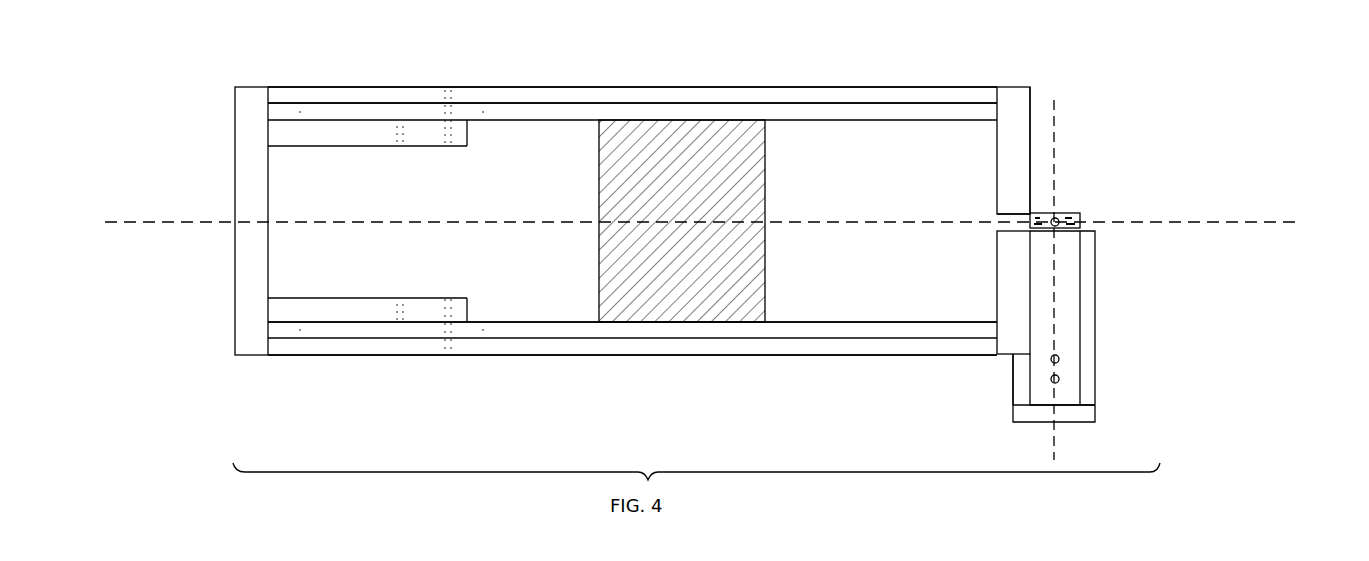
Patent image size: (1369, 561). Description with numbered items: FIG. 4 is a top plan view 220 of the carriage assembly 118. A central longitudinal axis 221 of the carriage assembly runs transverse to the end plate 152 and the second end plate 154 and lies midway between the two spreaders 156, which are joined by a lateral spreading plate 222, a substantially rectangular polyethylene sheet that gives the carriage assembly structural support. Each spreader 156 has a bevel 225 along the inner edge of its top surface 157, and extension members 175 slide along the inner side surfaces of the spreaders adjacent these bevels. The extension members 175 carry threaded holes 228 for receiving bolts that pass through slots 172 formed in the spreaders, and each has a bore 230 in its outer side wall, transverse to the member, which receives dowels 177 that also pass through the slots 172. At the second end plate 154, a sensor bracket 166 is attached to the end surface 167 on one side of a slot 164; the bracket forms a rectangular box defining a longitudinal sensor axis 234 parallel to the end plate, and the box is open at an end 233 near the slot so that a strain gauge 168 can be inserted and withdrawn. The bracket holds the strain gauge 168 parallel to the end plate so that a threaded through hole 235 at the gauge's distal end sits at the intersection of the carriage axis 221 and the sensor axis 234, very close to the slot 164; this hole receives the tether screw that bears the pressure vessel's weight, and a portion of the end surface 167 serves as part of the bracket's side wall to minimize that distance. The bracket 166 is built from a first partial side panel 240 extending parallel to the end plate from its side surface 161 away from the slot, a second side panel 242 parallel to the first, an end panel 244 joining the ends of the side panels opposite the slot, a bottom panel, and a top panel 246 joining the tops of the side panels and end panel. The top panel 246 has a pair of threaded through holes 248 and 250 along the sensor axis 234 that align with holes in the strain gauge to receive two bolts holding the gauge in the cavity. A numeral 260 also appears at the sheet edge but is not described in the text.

The carriage assembly 118 is at (203, 188).
The end plate 152 is at (235, 278).
The second end plate 154 is at (1013, 87).
The spreaders 156 is at (798, 88).
The top surface 157 is at (618, 93).
The side surface 161 is at (1000, 355).
The slot 164 is at (968, 222).
The sensor bracket 166 is at (1115, 252).
The end surface 167 is at (1035, 103).
The strain gauge 168 is at (1080, 222).
The slots 172 is at (483, 93).
The extension members 175 is at (300, 135).
The dowels 177 is at (450, 338).
The top plan view 220 is at (1265, 88).
The central longitudinal axis 221 is at (137, 222).
The lateral spreading plate 222 is at (706, 265).
The bevel 225 is at (500, 112).
The threaded holes 228 is at (400, 140).
The bore 230 is at (447, 128).
The open end 233 is at (1063, 188).
The longitudinal sensor axis 234 is at (1057, 130).
The threaded through hole 235 is at (1058, 220).
The first partial side panel 240 is at (1020, 380).
The second side panel 242 is at (1087, 395).
The end panel 244 is at (1030, 415).
The top panel 246 is at (1072, 315).
The threaded through hole 248 is at (1058, 356).
The threaded through hole 250 is at (1058, 376).
The alternate assembly 260 is at (175, 560).